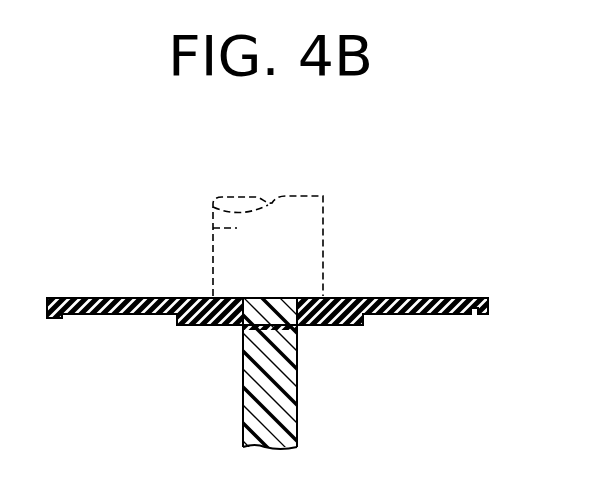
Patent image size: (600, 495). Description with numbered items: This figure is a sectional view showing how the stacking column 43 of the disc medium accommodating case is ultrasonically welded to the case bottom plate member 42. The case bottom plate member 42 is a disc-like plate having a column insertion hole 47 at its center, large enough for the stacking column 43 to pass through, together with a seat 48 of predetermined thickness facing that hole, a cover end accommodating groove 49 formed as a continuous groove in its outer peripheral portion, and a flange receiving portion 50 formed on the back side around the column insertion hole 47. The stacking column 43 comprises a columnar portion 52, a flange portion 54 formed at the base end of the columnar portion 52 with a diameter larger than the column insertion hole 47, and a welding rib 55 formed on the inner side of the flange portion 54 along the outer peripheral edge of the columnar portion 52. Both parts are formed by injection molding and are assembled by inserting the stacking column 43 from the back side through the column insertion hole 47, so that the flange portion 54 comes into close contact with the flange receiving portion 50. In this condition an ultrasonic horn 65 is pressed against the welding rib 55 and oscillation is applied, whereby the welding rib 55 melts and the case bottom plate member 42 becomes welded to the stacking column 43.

The case bottom plate member 42 is at (469, 287).
The stacking column 43 is at (230, 402).
The column insertion hole 47 is at (243, 343).
The seat 48 is at (343, 327).
The cover end accommodating groove 49 is at (477, 320).
The flange receiving portion 50 is at (338, 297).
The columnar portion 52 is at (283, 425).
The flange portion 54 is at (328, 296).
The welding rib 55 is at (230, 297).
The ultrasonic horn 65 is at (213, 228).